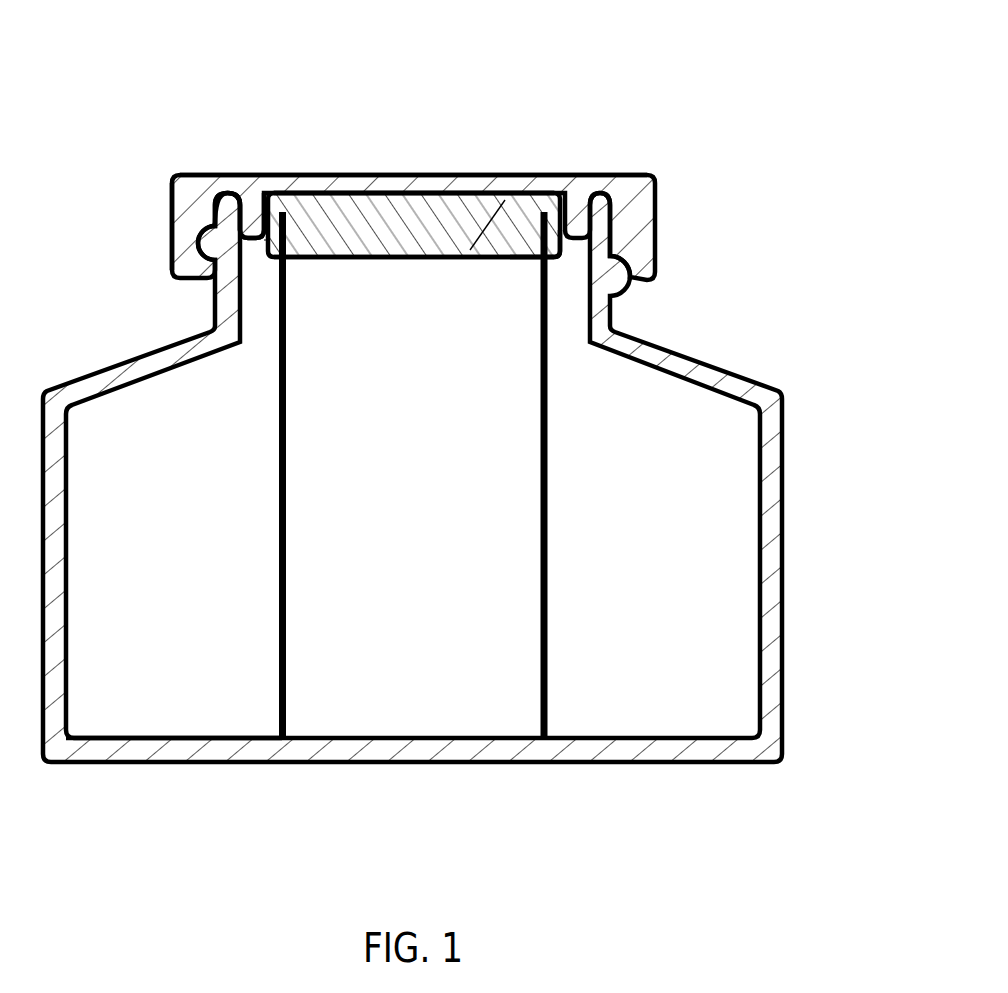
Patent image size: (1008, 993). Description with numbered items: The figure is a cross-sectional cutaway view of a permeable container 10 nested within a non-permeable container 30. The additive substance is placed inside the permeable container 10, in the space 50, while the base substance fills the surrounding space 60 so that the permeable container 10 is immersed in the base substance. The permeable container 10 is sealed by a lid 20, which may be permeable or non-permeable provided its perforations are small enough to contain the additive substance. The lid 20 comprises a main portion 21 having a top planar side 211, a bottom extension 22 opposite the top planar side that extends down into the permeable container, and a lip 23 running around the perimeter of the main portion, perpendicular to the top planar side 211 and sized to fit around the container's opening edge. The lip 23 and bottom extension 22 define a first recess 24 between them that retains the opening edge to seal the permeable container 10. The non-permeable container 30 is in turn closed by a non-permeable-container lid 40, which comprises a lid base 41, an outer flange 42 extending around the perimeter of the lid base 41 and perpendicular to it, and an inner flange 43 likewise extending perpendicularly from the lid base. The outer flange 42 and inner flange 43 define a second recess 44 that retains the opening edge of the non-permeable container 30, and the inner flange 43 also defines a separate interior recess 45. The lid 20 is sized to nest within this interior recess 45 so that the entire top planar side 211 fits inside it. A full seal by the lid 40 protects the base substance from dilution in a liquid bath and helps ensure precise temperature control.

The permeable container 10 is at (461, 522).
The lid 20 is at (512, 224).
The main portion 21 is at (525, 178).
The top planar side 211 is at (493, 207).
The bottom extension 22 is at (405, 244).
The lip 23 is at (558, 248).
The first recess 24 is at (527, 276).
The non-permeable container 30 is at (126, 350).
The non-permeable-container lid 40 is at (404, 223).
The lid base 41 is at (284, 173).
The outer flange 42 is at (171, 229).
The inner flange 43 is at (245, 199).
The second recess 44 is at (218, 205).
The interior recess 45 is at (261, 258).
The space 50 is at (454, 720).
The space 60 is at (195, 720).